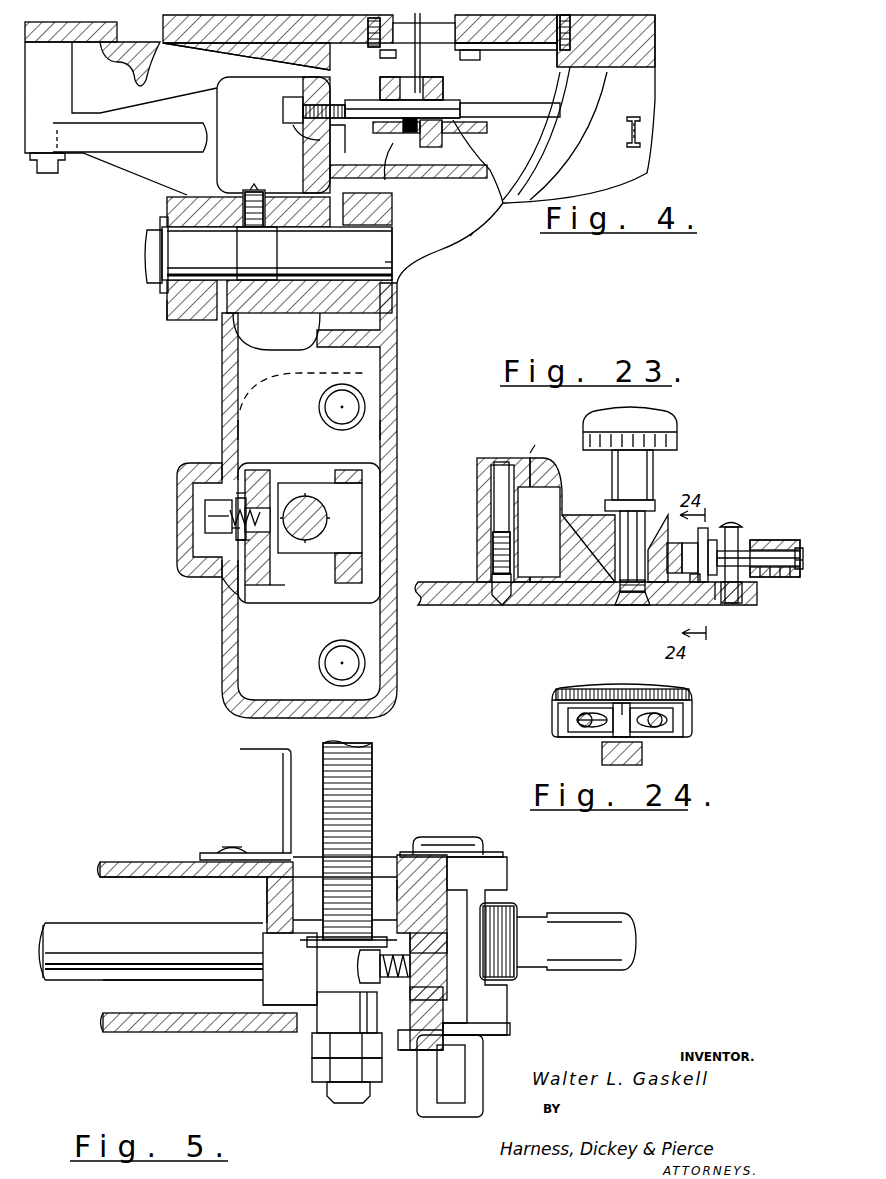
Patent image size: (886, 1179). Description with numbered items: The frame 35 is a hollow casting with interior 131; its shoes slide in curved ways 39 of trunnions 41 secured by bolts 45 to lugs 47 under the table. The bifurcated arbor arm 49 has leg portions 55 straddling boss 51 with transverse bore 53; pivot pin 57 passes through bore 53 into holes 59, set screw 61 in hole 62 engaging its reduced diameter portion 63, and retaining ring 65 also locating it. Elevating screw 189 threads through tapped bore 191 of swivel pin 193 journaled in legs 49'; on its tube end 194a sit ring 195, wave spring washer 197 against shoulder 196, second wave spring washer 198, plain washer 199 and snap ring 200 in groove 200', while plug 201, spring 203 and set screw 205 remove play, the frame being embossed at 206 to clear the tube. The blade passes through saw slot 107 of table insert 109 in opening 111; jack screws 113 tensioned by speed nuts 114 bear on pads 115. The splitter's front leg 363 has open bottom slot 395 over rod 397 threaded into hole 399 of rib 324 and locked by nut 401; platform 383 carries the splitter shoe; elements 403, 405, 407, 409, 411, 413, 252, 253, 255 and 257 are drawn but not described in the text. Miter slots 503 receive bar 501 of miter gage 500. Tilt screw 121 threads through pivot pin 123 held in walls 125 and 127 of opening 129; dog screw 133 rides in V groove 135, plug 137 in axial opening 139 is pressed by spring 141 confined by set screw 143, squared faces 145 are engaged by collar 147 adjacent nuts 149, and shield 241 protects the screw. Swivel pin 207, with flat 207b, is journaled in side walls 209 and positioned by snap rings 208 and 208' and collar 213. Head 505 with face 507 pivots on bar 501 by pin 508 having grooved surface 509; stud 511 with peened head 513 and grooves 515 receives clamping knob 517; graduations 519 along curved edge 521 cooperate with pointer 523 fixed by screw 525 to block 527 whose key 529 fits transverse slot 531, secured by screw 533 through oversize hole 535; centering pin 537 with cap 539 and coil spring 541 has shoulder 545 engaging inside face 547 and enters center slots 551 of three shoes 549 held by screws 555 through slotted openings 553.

In FIG. 4, the frame 35 is at (482, 240).
In FIG. 5, the frame 35 is at (146, 1036).
In FIG. 4, the ways 39 is at (560, 145).
In FIG. 4, the trunnions 41 is at (97, 150).
In FIG. 4, the bolts 45 is at (45, 175).
In FIG. 4, the lugs 47 is at (55, 97).
In FIG. 4, the arbor arm 49 is at (137, 321).
In FIG. 4, the legs of the arbor arm 49' is at (339, 436).
In FIG. 4, the boss 51 is at (262, 322).
In FIG. 4, the transverse bore 53 is at (275, 215).
In FIG. 4, the leg portions 55 is at (398, 312).
In FIG. 4, the arbor arm pivot pin 57 is at (378, 240).
In FIG. 4, the holes 59 is at (147, 257).
In FIG. 4, the set screw 61 is at (254, 190).
In FIG. 4, the hole 62 is at (262, 193).
In FIG. 4, the reduced diameter portion 63 is at (258, 258).
In FIG. 4, the retaining ring 65 is at (160, 285).
In FIG. 4, the saw slot 107 is at (436, 41).
In FIG. 4, the table insert 109 is at (505, 50).
In FIG. 4, the arbor nut access opening 111 is at (595, 40).
In FIG. 4, the jack screws 113 is at (372, 50).
In FIG. 4, the speed nut 114 is at (409, 42).
In FIG. 4, the pads 115 is at (390, 58).
In FIG. 4, the front leg 363 is at (421, 55).
In FIG. 4, the open bottom slot 395 is at (440, 147).
In FIG. 4, the horizontal rod 397 is at (342, 135).
In FIG. 4, the hole 399 is at (295, 131).
In FIG. 4, the nut 401 is at (283, 105).
In FIG. 4, the link 403 is at (460, 125).
In FIG. 4, the bar 405 is at (478, 130).
In FIG. 4, the lower plate 407 is at (385, 135).
In FIG. 4, the upper block 409 is at (445, 88).
In FIG. 4, the bar edge 411 is at (402, 108).
In FIG. 4, the plate 413 is at (455, 100).
In FIG. 4, the rib 324 is at (300, 150).
In FIG. 4, the miter slots 503 is at (172, 62).
In FIG. 4, the flat platform 383 is at (292, 368).
In FIG. 4, the hole 255 is at (360, 395).
In FIG. 4, the hole bore 257 is at (355, 411).
In FIG. 4, the lower hole 253 is at (342, 650).
In FIG. 4, the lower hole bore 252 is at (355, 665).
In FIG. 4, the hollow interior 131 is at (238, 640).
In FIG. 5, the hollow interior 131 is at (160, 862).
In FIG. 4, the elevating screw 189 is at (290, 541).
In FIG. 5, the elevating screw 189 is at (60, 922).
In FIG. 4, the tapped bore 191 is at (338, 468).
In FIG. 4, the swivel pin 193 is at (345, 495).
In FIG. 4, the ring 195 is at (245, 590).
In FIG. 4, the shoulder 196 is at (268, 500).
In FIG. 4, the wave spring washer 197 is at (262, 470).
In FIG. 4, the wave spring washer 198 is at (222, 580).
In FIG. 4, the plain washer 199 is at (232, 545).
In FIG. 4, the snap ring 200 is at (207, 488).
In FIG. 4, the groove 200' is at (189, 547).
In FIG. 4, the plug 201 is at (276, 582).
In FIG. 4, the spring 203 is at (236, 500).
In FIG. 4, the set screw 205 is at (205, 520).
In FIG. 4, the embossed portion 206 is at (177, 470).
In FIG. 4, the tube end 194a is at (230, 515).
In FIG. 23, the miter gage construction 500 is at (538, 446).
In FIG. 23, the bar 501 is at (467, 607).
In FIG. 24, the bar 501 is at (602, 755).
In FIG. 23, the head 505 is at (560, 492).
In FIG. 23, the flat vertical face 507 is at (477, 500).
In FIG. 23, the pin 508 is at (502, 606).
In FIG. 23, the grooved surface 509 is at (493, 558).
In FIG. 23, the stud 511 is at (620, 556).
In FIG. 23, the peened head 513 is at (620, 600).
In FIG. 23, the grooves 515 is at (600, 588).
In FIG. 23, the knob 517 is at (680, 437).
In FIG. 24, the graduations 519 is at (612, 688).
In FIG. 23, the edge 521 is at (706, 528).
In FIG. 24, the edge 521 is at (690, 692).
In FIG. 23, the pointer 523 is at (714, 538).
In FIG. 23, the screw 525 is at (760, 549).
In FIG. 23, the block 527 is at (797, 548).
In FIG. 23, the key 529 is at (772, 580).
In FIG. 23, the transverse slot 531 is at (700, 600).
In FIG. 23, the screw 533 is at (725, 605).
In FIG. 23, the oversize hole 535 is at (765, 580).
In FIG. 23, the centering pin 537 is at (798, 572).
In FIG. 23, the cap 539 is at (782, 580).
In FIG. 23, the coil spring 541 is at (790, 580).
In FIG. 23, the shoulder 545 is at (760, 538).
In FIG. 23, the inside face 547 is at (752, 540).
In FIG. 23, the shoes 549 is at (720, 600).
In FIG. 24, the shoes 549 is at (673, 718).
In FIG. 24, the center slots 551 is at (623, 703).
In FIG. 24, the slotted openings 553 is at (580, 721).
In FIG. 23, the screws 555 is at (658, 520).
In FIG. 24, the screws 555 is at (585, 713).
In FIG. 5, the tilt screw 121 is at (372, 767).
In FIG. 5, the pivot pin 123 is at (268, 980).
In FIG. 5, the wall 125 is at (268, 893).
In FIG. 5, the wall 127 is at (447, 868).
In FIG. 5, the opening 129 is at (397, 885).
In FIG. 5, the radial dog screw 133 is at (402, 1052).
In FIG. 5, the V groove 135 is at (445, 1000).
In FIG. 5, the plug 137 is at (370, 975).
In FIG. 5, the axial opening 139 is at (358, 960).
In FIG. 5, the spring 141 is at (347, 1012).
In FIG. 5, the set screw 143 is at (263, 1000).
In FIG. 5, the machined-off square portions 145 is at (262, 935).
In FIG. 5, the collar 147 is at (312, 1046).
In FIG. 5, the nuts 149 is at (312, 1070).
In FIG. 5, the swivel pin 207 is at (466, 837).
In FIG. 5, the flat 207b is at (455, 1060).
In FIG. 5, the snap ring 208 is at (479, 841).
In FIG. 5, the snap ring 208' is at (508, 1025).
In FIG. 5, the side walls 209 is at (507, 877).
In FIG. 5, the collar 213 is at (500, 913).
In FIG. 5, the vertical shield 241 is at (283, 793).